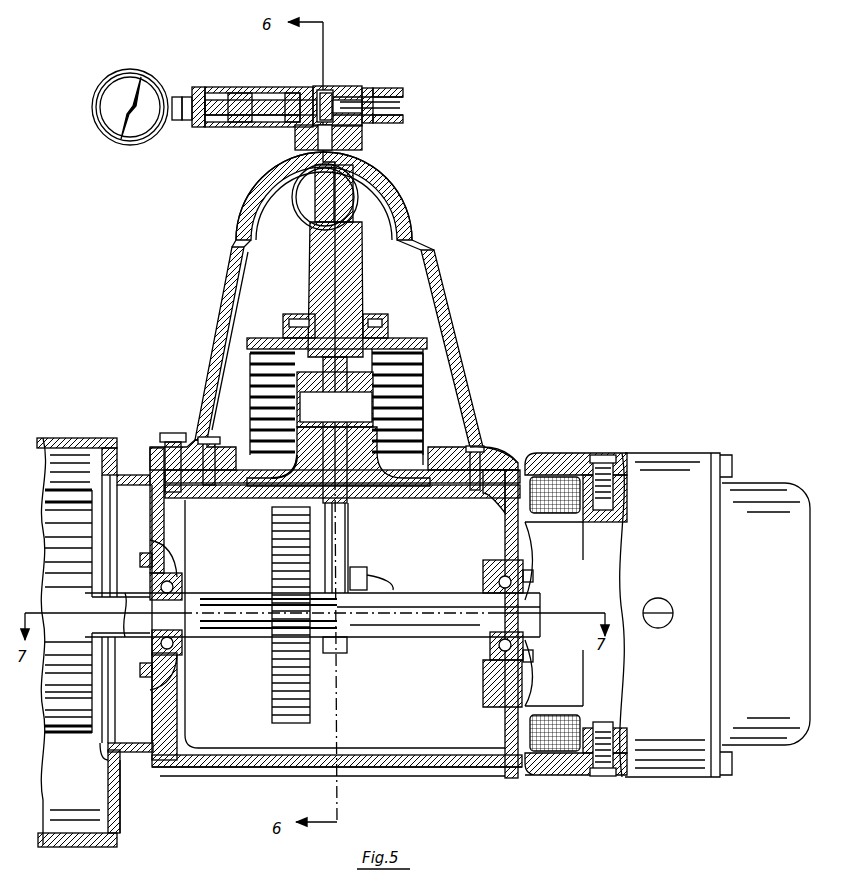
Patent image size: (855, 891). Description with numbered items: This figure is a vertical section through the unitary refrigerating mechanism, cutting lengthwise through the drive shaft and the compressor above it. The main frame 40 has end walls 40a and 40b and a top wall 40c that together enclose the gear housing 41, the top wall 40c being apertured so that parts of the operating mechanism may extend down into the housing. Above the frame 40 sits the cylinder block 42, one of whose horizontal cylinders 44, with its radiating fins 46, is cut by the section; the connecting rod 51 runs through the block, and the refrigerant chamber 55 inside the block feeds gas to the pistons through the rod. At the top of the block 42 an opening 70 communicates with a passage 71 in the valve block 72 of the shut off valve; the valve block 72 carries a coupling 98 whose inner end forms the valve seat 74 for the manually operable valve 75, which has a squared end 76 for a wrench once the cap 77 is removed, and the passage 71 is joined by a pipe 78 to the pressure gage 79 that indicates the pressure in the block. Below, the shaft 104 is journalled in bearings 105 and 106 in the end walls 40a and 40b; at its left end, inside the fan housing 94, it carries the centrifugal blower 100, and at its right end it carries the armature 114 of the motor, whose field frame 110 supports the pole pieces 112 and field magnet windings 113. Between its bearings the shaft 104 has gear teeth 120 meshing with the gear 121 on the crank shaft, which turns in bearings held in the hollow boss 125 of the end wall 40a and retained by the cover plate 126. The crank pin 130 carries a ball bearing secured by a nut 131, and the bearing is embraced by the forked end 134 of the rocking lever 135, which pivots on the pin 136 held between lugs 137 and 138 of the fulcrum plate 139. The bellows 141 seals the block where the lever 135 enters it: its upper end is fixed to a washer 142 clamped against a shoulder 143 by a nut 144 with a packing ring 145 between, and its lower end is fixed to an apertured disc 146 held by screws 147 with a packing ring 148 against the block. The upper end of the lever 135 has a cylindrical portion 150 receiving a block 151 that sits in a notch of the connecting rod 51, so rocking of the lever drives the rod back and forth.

The main frame 40 is at (336, 626).
The end wall 40a is at (222, 734).
The end wall 40b is at (505, 712).
The top wall 40c is at (505, 522).
The gear housing 41 is at (396, 752).
The cylinder block 42 is at (455, 302).
The cylinder 44 is at (300, 156).
The radiating fins 46 is at (406, 166).
The connecting rod 51 is at (318, 238).
The refrigerant chamber 55 is at (228, 268).
The opening 70 is at (290, 126).
The passage 71 is at (366, 90).
The valve block 72 is at (342, 86).
The valve seat 74 is at (355, 143).
The manually operable valve 75 is at (320, 93).
The squared end 76 is at (200, 128).
The cap 77 is at (205, 88).
The pipe 78 is at (185, 97).
The pressure gage 79 is at (100, 86).
The fan housing 94 is at (120, 828).
The coupling 98 is at (392, 104).
The blower 100 is at (75, 740).
The shaft 104 is at (420, 593).
The bearing 105 is at (182, 586).
The bearing 106 is at (500, 648).
The field frame 110 is at (560, 453).
The pole pieces 112 is at (606, 460).
The field magnet windings 113 is at (566, 480).
The armature 114 is at (612, 692).
The gear teeth 120 is at (240, 604).
The gear 121 is at (272, 700).
The hollow boss 125 is at (220, 718).
The cover plate 126 is at (136, 678).
The crank pin 130 is at (396, 594).
The nut 131 is at (350, 560).
The forked end 134 is at (352, 588).
The rocking lever 135 is at (342, 498).
The pin 136 is at (372, 392).
The lug 137 is at (282, 430).
The lug 138 is at (400, 438).
The fulcrum plate 139 is at (422, 492).
The bellows 141 is at (427, 366).
The washer 142 is at (280, 338).
The shoulder 143 is at (288, 325).
The nut 144 is at (380, 310).
The packing ring 145 is at (375, 335).
The apertured disc 146 is at (383, 492).
The screws 147 is at (215, 492).
The packing ring 148 is at (470, 442).
The cylindrical portion 150 is at (347, 204).
The block 151 is at (358, 192).